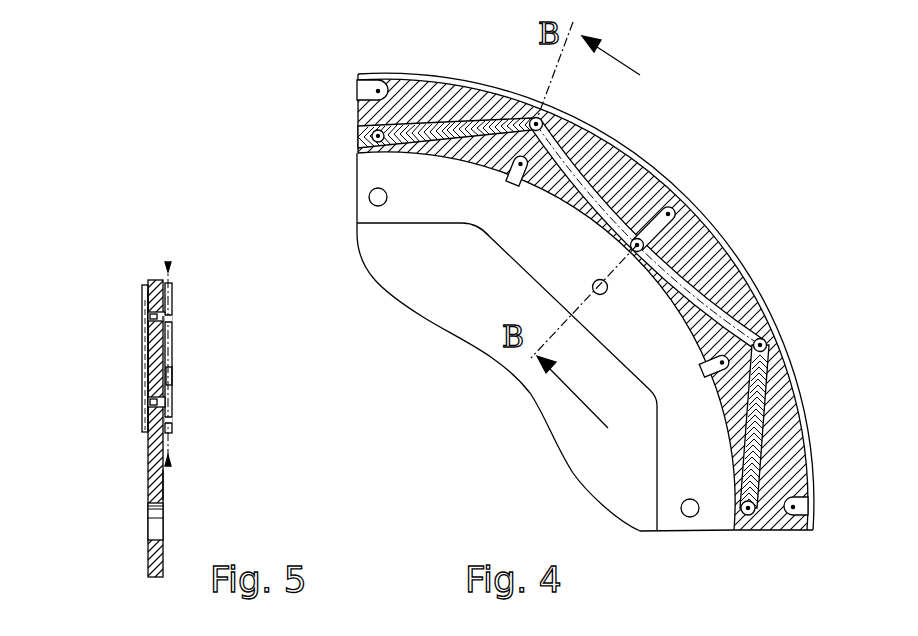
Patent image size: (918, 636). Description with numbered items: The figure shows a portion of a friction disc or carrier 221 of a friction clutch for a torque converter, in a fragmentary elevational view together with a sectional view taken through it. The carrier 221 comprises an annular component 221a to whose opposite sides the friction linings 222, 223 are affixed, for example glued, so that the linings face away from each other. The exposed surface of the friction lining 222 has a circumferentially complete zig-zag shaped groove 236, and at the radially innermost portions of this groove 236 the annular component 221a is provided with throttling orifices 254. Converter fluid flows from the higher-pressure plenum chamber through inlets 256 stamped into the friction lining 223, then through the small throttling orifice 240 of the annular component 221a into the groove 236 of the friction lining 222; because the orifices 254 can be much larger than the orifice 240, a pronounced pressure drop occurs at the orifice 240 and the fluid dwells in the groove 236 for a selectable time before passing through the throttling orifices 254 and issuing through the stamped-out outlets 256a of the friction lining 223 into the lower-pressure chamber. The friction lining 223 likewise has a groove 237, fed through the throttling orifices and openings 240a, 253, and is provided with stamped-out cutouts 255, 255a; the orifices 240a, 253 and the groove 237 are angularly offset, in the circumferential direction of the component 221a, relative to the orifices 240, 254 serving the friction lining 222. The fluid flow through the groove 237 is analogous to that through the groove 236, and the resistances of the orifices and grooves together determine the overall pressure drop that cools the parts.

In FIG. 4, the friction disc or carrier 221 is at (450, 410).
In FIG. 5, the friction disc or carrier 221 is at (128, 504).
In FIG. 4, the annular component 221a is at (693, 463).
In FIG. 5, the annular component 221a is at (162, 485).
In FIG. 4, the friction lining 222 is at (717, 247).
In FIG. 5, the friction lining 222 is at (120, 287).
In FIG. 4, the friction lining 223 is at (657, 168).
In FIG. 5, the friction lining 223 is at (172, 345).
In FIG. 4, the zig-zag shaped groove 236 is at (585, 160).
In FIG. 5, the zig-zag shaped groove 236 is at (145, 310).
In FIG. 5, the groove 237 is at (168, 373).
In FIG. 4, the throttling orifice 240 is at (766, 338).
In FIG. 5, the throttling orifice 240 is at (148, 322).
In FIG. 4, the throttling orifice 240a is at (792, 511).
In FIG. 5, the throttling orifice 240a is at (165, 318).
In FIG. 4, the throttling orifice or opening 253 is at (718, 364).
In FIG. 5, the throttling orifice or opening 253 is at (124, 374).
In FIG. 4, the throttling orifice 254 is at (630, 244).
In FIG. 5, the throttling orifice 254 is at (153, 407).
In FIG. 4, the stamped-out cutout 255 is at (677, 208).
In FIG. 4, the stamped-out cutout 255a is at (518, 167).
In FIG. 5, the inlet 256 is at (170, 321).
In FIG. 5, the outlet 256a is at (168, 422).